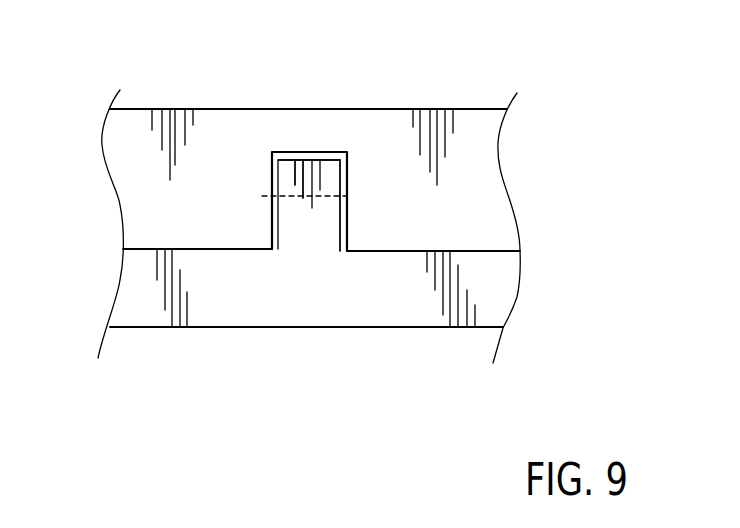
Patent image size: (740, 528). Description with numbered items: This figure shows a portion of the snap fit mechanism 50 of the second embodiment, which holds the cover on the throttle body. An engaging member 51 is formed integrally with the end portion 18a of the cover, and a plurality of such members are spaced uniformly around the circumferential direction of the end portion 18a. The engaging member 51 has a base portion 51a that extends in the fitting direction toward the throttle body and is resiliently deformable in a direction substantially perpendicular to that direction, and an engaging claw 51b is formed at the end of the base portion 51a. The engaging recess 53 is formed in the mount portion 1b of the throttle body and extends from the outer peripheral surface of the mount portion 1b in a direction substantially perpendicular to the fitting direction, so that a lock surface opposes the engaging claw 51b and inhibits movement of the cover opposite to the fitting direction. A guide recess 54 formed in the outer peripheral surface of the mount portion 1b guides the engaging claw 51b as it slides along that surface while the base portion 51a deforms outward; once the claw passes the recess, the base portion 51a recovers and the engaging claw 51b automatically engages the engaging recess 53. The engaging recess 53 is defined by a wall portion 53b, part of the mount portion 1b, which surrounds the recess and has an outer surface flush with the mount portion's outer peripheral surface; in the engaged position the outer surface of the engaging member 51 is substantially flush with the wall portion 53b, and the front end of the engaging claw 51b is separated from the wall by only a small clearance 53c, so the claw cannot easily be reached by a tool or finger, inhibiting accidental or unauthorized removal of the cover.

The mount portion 1b is at (128, 125).
The snap fit mechanism 50 is at (258, 197).
The engaging recess 53 is at (278, 184).
The wall portion 53b is at (308, 135).
The clearance 53c is at (293, 155).
The guide recess 54 is at (278, 242).
The engaging member 51 is at (305, 233).
The base portion 51a is at (325, 217).
The engaging claw 51b is at (318, 178).
The end portion 18a is at (370, 303).